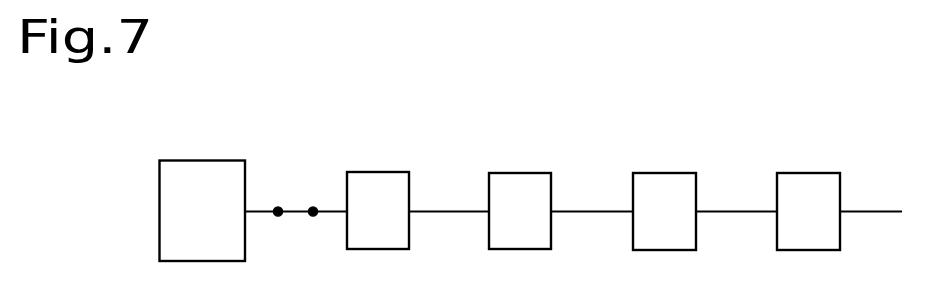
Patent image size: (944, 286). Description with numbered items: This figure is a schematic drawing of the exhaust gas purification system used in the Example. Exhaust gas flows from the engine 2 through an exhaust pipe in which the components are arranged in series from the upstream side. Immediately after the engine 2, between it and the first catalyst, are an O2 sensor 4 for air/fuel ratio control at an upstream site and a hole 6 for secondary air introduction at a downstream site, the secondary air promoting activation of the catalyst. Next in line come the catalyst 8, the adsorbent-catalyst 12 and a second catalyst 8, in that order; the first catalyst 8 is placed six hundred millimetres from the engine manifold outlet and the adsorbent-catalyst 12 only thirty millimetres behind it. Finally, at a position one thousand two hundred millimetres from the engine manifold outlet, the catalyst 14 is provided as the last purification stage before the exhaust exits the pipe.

The engine 2 is at (197, 160).
The O2 sensor 4 is at (277, 207).
The hole for secondary air introduction 6 is at (313, 207).
The catalyst 19 8 is at (379, 172).
The adsorbent-catalyst 12 is at (520, 173).
The catalyst 26 14 is at (808, 174).